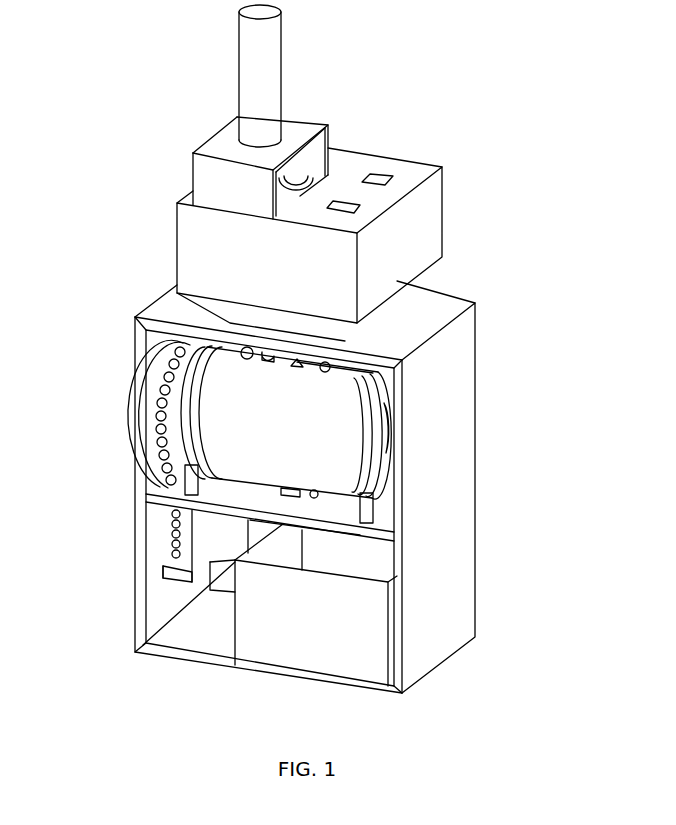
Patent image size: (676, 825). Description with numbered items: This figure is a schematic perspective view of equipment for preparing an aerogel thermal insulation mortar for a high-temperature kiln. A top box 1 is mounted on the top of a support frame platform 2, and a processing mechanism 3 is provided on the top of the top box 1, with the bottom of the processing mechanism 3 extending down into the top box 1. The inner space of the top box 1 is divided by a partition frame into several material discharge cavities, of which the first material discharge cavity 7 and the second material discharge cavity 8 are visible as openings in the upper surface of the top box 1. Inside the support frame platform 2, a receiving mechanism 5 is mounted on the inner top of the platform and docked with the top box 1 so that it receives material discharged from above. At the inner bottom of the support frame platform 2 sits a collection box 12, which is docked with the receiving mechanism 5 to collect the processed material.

The top box 1 is at (193, 250).
The support frame platform 2 is at (148, 355).
The processing mechanism 3 is at (270, 170).
The receiving mechanism 5 is at (350, 413).
The first material discharge cavity 7 is at (392, 177).
The second material discharge cavity 8 is at (362, 209).
The collection box 12 is at (358, 643).